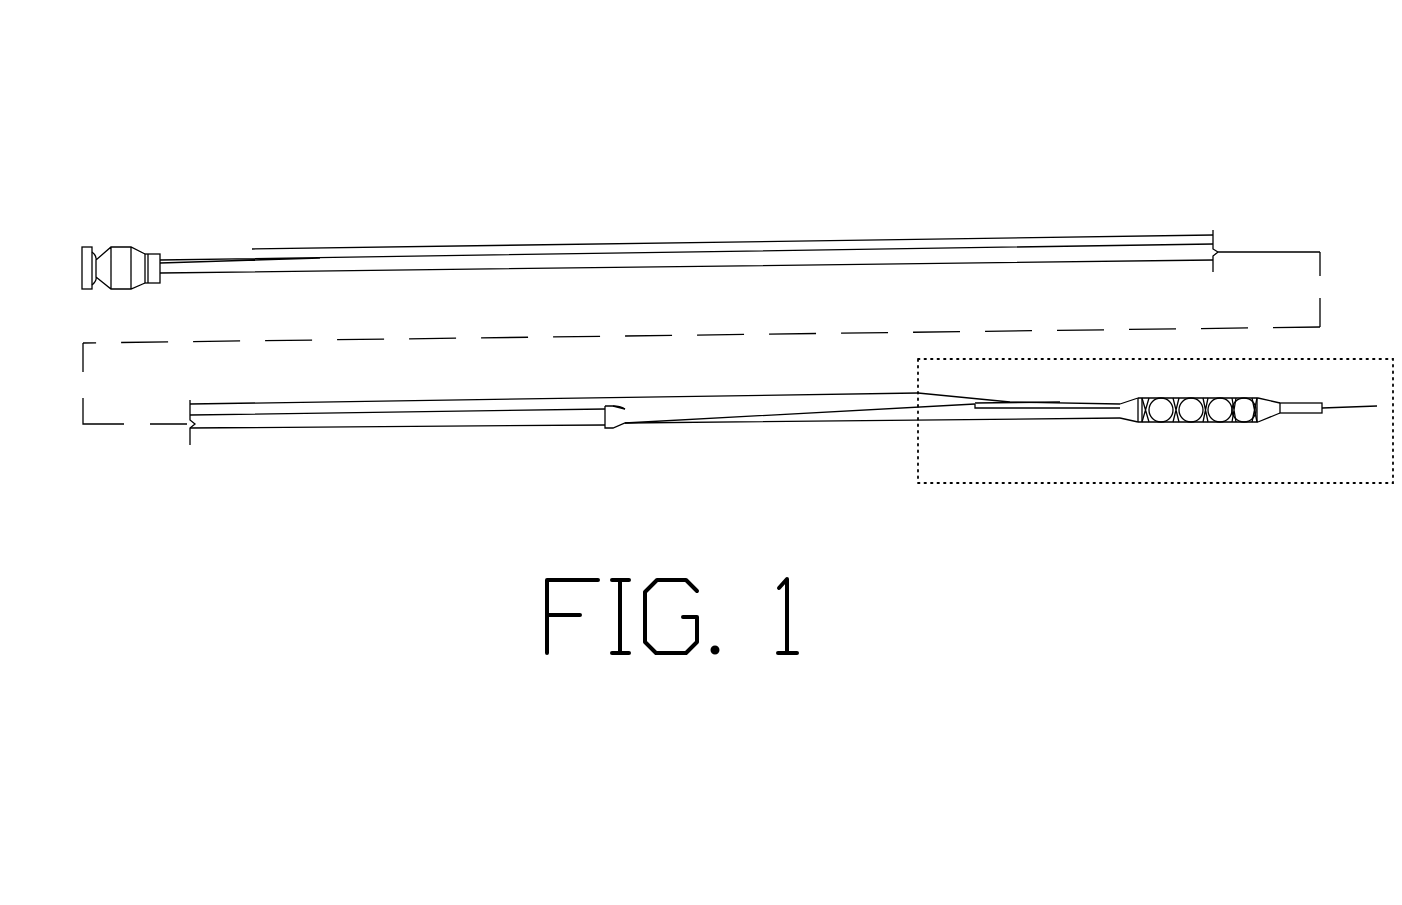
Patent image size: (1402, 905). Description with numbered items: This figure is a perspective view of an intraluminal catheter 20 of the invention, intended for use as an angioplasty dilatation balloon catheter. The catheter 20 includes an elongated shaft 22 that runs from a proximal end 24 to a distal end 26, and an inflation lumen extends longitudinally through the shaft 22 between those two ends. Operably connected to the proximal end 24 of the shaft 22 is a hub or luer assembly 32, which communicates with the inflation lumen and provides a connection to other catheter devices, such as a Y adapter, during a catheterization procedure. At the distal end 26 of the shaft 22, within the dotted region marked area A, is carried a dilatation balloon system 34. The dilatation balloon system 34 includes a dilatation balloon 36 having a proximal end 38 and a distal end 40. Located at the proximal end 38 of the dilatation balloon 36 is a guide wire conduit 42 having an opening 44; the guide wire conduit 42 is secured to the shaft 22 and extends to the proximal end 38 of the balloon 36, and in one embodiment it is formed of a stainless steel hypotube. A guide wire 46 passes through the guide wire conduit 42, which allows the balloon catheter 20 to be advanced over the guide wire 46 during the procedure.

The catheter 20 is at (295, 93).
The shaft 22 is at (755, 204).
The proximal end 24 is at (258, 218).
The distal end 26 is at (1188, 494).
The luer assembly 32 is at (117, 247).
The dilatation balloon system 34 is at (1080, 483).
The dilatation balloon 36 is at (1207, 397).
The proximal end 38 is at (1132, 400).
The distal end 40 is at (1263, 396).
The guide wire conduit 42 is at (1063, 403).
The opening 44 is at (1032, 401).
The guide wire 46 is at (952, 238).